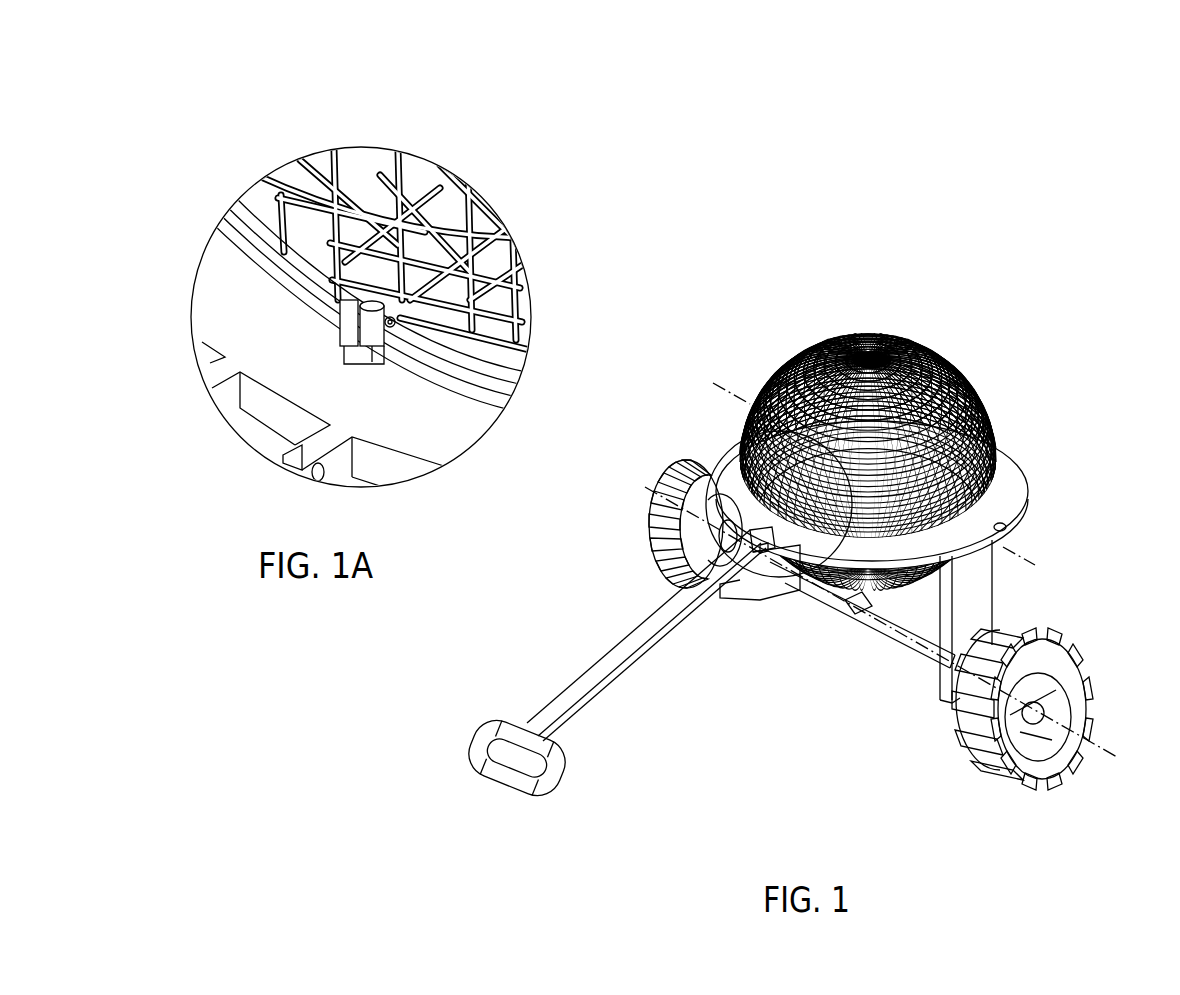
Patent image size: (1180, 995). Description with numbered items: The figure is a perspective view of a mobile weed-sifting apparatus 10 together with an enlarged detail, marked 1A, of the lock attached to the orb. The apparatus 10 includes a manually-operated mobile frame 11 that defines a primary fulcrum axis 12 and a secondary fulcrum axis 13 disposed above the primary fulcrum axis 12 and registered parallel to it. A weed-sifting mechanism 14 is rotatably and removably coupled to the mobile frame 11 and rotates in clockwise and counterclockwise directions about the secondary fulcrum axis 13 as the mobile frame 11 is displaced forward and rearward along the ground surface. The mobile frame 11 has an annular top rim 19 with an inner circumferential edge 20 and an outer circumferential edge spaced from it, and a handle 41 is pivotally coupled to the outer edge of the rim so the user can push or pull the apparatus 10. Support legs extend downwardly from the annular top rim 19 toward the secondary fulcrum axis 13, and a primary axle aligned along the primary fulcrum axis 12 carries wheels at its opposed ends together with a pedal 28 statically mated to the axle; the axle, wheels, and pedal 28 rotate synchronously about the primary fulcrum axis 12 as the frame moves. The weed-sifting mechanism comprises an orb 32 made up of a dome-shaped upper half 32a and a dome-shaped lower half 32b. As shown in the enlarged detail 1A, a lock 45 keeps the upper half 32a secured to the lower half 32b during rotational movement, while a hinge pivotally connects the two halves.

In FIG. 1, the mobile weed-sifting apparatus 10 is at (1040, 362).
In FIG. 1, the manually-operated mobile frame 11 is at (1018, 533).
In FIG. 1, the primary fulcrum axis 12 is at (1097, 748).
In FIG. 1, the secondary fulcrum axis 13 is at (740, 400).
In FIG. 1, the weed-sifting mechanism 14 is at (808, 340).
In FIG. 1A, the annular top rim 19 is at (415, 440).
In FIG. 1A, the inner circumferential edge 20 is at (352, 340).
In FIG. 1, the pedal 28 is at (820, 600).
In FIG. 1A, the orb 32 is at (262, 172).
In FIG. 1A, the dome-shaped upper half 32a is at (510, 380).
In FIG. 1A, the dome-shaped lower half 32b is at (505, 408).
In FIG. 1, the handle 41 is at (607, 688).
In FIG. 1A, the lock 45 is at (398, 330).
In FIG. 1, the detail view area 1A is at (745, 485).